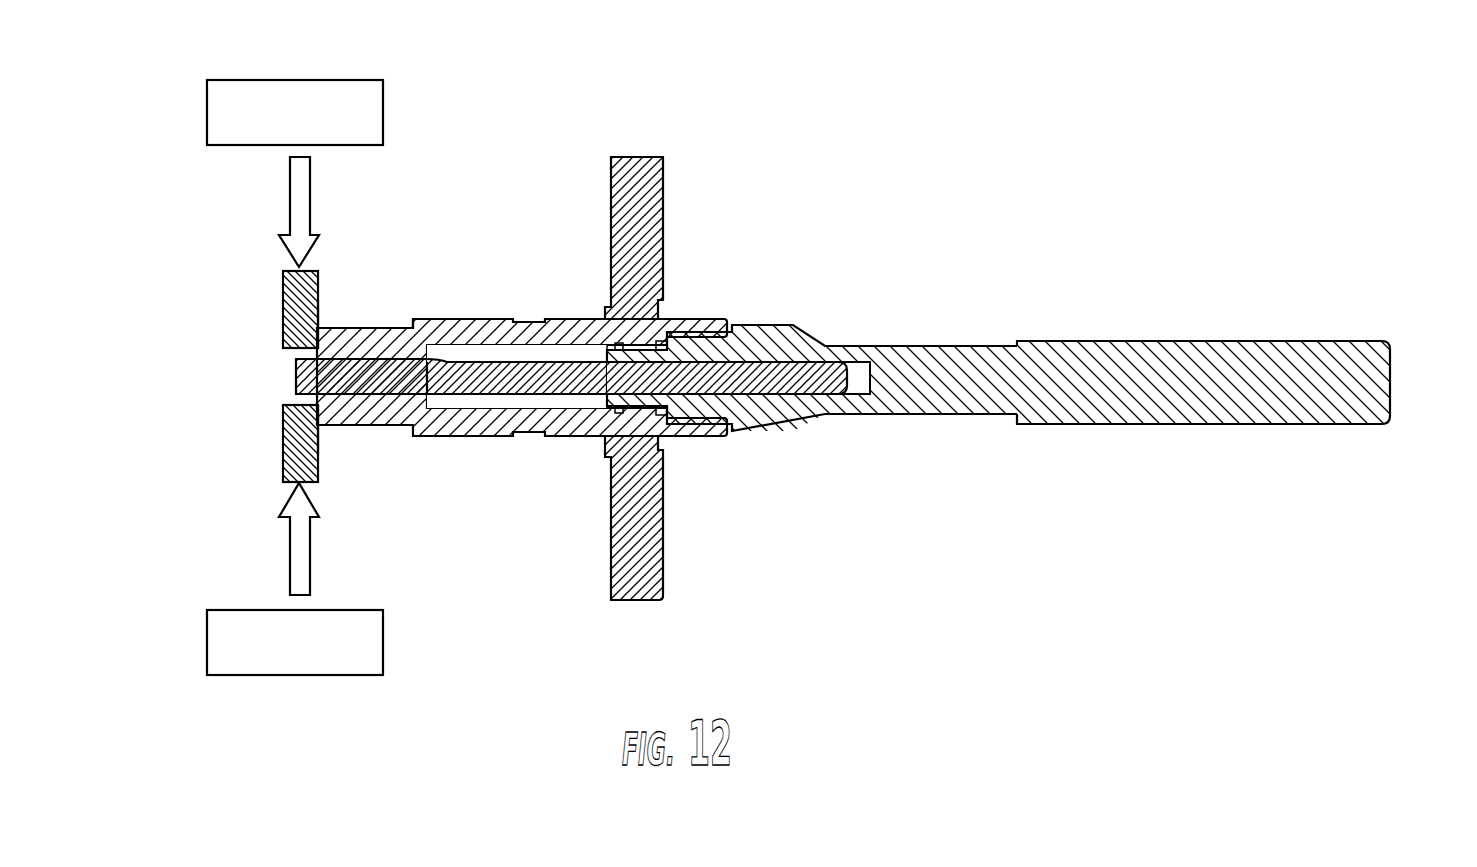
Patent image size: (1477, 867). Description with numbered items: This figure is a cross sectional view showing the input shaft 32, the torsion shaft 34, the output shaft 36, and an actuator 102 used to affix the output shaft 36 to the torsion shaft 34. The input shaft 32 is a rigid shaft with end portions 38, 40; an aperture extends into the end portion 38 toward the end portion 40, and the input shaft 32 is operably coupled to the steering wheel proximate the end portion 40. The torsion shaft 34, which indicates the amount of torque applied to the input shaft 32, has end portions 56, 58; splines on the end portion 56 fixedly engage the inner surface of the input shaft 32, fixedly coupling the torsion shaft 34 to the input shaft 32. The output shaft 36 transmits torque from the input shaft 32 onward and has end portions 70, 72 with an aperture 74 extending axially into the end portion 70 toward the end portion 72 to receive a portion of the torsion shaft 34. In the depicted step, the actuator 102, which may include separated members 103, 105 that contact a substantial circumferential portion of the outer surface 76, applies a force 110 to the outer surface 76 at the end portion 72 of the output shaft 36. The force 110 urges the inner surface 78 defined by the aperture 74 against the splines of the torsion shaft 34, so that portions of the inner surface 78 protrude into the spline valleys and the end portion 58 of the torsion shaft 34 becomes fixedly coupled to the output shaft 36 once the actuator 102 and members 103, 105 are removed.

The input shaft 32 is at (1110, 334).
The torsion shaft 34 is at (456, 410).
The output shaft 36 is at (482, 312).
The end portion 38 is at (790, 327).
The end portion 40 is at (1370, 341).
The end portion 56 is at (840, 362).
The end portion 58 is at (296, 368).
The end portion 70 is at (690, 320).
The end portion 72 is at (388, 327).
The aperture 74 is at (525, 355).
The outer surface 76 is at (300, 345).
The inner surface 78 is at (342, 390).
The actuator 102 is at (232, 80).
The separated member 103 is at (283, 290).
The separated member 105 is at (283, 462).
The force 110 is at (290, 210).